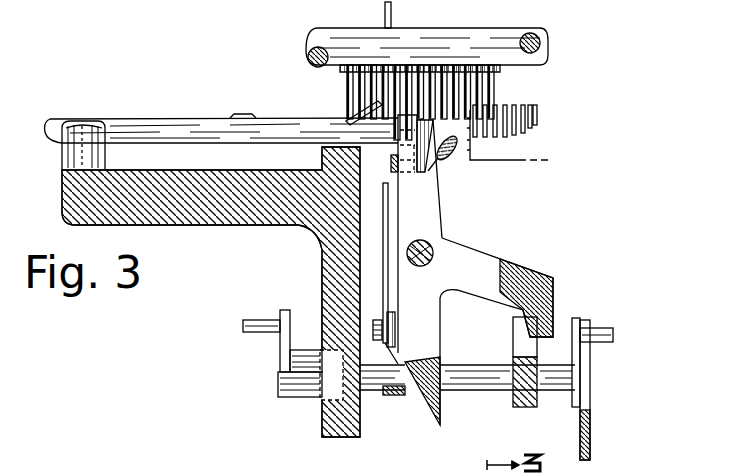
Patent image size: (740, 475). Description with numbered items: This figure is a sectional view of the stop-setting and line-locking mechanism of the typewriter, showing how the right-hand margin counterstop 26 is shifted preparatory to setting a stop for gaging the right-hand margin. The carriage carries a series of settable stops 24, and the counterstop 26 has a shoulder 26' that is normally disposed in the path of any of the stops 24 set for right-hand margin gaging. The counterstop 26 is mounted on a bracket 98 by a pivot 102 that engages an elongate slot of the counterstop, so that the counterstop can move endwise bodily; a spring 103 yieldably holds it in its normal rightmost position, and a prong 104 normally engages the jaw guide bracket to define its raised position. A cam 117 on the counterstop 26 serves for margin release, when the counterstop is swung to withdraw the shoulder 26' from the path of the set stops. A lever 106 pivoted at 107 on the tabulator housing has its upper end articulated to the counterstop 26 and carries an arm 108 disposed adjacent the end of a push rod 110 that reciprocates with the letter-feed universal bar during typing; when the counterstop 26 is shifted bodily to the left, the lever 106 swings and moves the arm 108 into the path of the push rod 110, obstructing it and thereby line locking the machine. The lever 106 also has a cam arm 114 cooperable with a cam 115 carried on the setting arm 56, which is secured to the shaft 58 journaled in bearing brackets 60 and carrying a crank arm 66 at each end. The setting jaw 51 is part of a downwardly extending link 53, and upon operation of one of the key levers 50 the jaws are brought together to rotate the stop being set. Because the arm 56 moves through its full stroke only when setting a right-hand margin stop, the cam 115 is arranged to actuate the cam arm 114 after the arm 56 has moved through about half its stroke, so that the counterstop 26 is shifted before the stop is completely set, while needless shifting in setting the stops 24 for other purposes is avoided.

The stops 24 is at (480, 100).
The right-hand margin counterstop 26 is at (221, 117).
The cam 117 is at (240, 116).
The shoulder 26' is at (349, 110).
The bracket 98 is at (64, 162).
The pivot 102 is at (82, 120).
The prong 104 is at (390, 166).
The spring 103 is at (450, 158).
The lever 106 is at (430, 218).
The arm 108 is at (500, 268).
The pivot 107 is at (424, 266).
The push rod 110 is at (557, 300).
The cam arm 114 is at (440, 320).
The cam 115 is at (383, 393).
The link 53 is at (388, 203).
The arm 56 is at (377, 341).
The shaft 58 is at (493, 368).
The bearing brackets 60 is at (330, 398).
The crank arm 66 is at (283, 345).
The key levers 50 is at (592, 437).
The setting jaw 51 is at (524, 465).